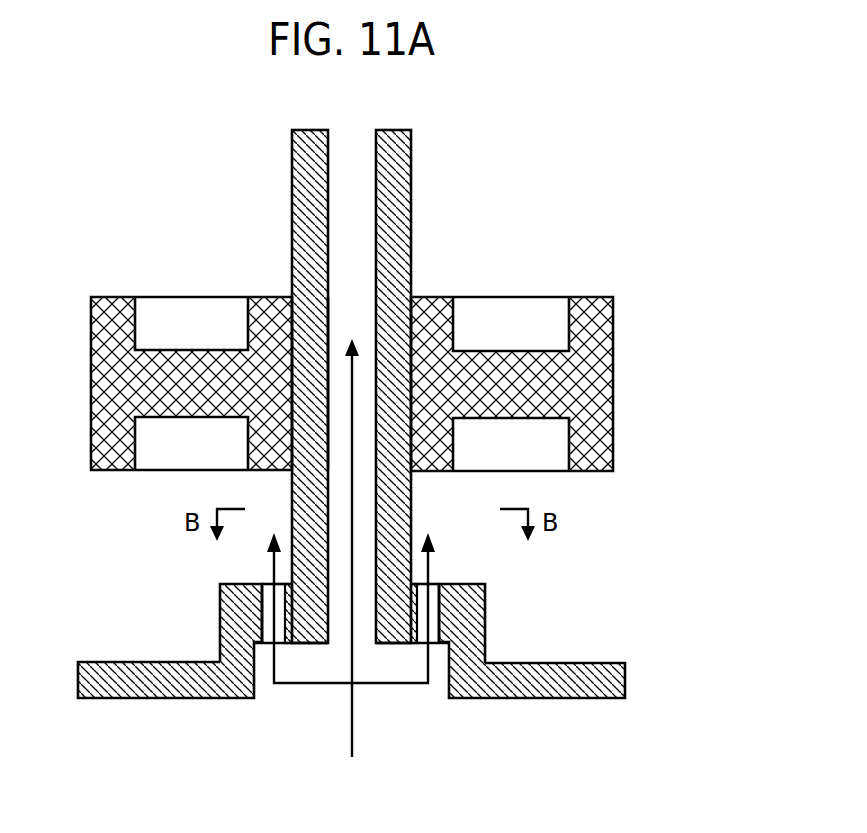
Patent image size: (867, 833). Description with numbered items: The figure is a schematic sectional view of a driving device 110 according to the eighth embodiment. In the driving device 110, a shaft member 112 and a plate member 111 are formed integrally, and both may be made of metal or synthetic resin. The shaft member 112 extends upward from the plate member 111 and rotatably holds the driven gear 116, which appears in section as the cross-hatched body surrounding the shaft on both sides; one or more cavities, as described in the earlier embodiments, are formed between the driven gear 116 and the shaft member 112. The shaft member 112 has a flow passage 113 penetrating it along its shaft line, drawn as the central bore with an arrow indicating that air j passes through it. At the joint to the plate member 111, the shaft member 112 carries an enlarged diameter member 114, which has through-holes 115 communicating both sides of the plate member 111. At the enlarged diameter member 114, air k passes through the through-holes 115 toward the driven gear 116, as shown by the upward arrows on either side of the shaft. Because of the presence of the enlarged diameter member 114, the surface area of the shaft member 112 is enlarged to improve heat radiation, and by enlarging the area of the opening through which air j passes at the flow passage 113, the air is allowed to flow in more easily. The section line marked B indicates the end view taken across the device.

The driving device 110 is at (531, 203).
The plate member 111 is at (583, 663).
The shaft member 112 is at (411, 193).
The flow passage 113 is at (337, 203).
The enlarged diameter member 114 is at (487, 630).
The through-holes 115 is at (268, 584).
The driven gear 116 is at (508, 297).
The air j is at (347, 370).
The air k is at (270, 607).